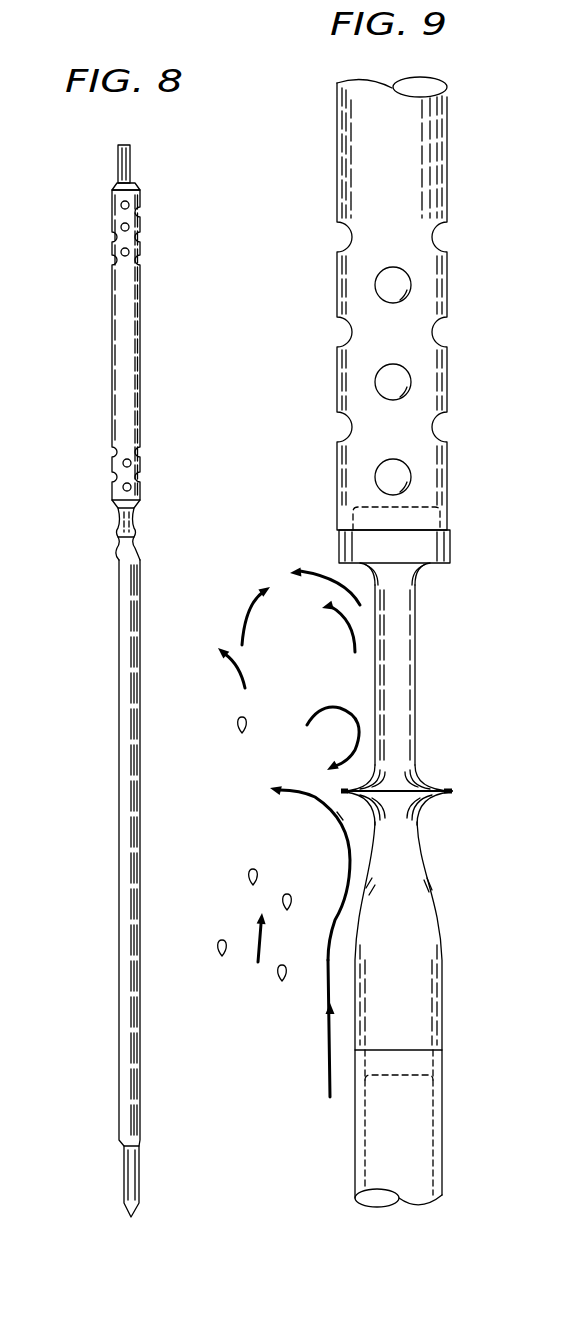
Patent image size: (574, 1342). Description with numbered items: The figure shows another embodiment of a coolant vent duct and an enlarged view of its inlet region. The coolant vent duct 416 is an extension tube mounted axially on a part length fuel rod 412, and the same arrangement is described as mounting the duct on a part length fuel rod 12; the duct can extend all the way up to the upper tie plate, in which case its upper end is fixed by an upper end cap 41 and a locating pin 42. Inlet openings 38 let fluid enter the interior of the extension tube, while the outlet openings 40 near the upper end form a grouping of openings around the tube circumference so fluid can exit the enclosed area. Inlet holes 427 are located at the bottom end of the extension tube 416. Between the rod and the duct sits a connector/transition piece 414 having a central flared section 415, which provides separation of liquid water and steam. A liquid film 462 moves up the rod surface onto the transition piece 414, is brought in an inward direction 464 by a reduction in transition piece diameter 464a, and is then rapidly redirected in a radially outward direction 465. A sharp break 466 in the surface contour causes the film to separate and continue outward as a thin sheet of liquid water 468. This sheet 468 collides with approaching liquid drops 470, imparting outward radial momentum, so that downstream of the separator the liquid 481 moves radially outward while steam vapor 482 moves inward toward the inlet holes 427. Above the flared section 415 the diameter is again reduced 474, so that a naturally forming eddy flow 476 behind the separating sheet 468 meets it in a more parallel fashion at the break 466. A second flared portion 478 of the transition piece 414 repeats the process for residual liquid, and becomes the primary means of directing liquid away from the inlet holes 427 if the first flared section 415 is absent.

In FIG. 8, the part length fuel rod 12 is at (119, 807).
In FIG. 8, the inlet openings 38 is at (112, 472).
In FIG. 8, the outlet openings 40 is at (140, 215).
In FIG. 8, the upper end cap 41 is at (112, 188).
In FIG. 8, the locating pin 42 is at (131, 155).
In FIG. 9, the part length fuel rod 412 is at (443, 1135).
In FIG. 8, the connector/transition piece 414 is at (85, 545).
In FIG. 9, the connector/transition piece 414 is at (428, 668).
In FIG. 9, the central flared section 415 is at (417, 802).
In FIG. 8, the coolant vent duct 416 is at (147, 334).
In FIG. 9, the coolant vent duct 416 is at (447, 165).
In FIG. 9, the inlet holes 427 is at (437, 330).
In FIG. 9, the liquid film 462 is at (328, 1045).
In FIG. 9, the inward direction 464 is at (352, 885).
In FIG. 9, the reduction in transition piece diameter 464a is at (427, 885).
In FIG. 9, the radially outward direction 465 is at (337, 812).
In FIG. 9, the sharp break 466 is at (452, 791).
In FIG. 9, the thin sheet of liquid water 468 is at (303, 793).
In FIG. 9, the liquid drops 470 is at (222, 942).
In FIG. 9, the reduced diameter 474 is at (418, 770).
In FIG. 9, the eddy flow 476 is at (325, 710).
In FIG. 9, the second flared portion 478 is at (417, 572).
In FIG. 9, the liquid 481 is at (242, 668).
In FIG. 9, the steam vapor 482 is at (255, 600).